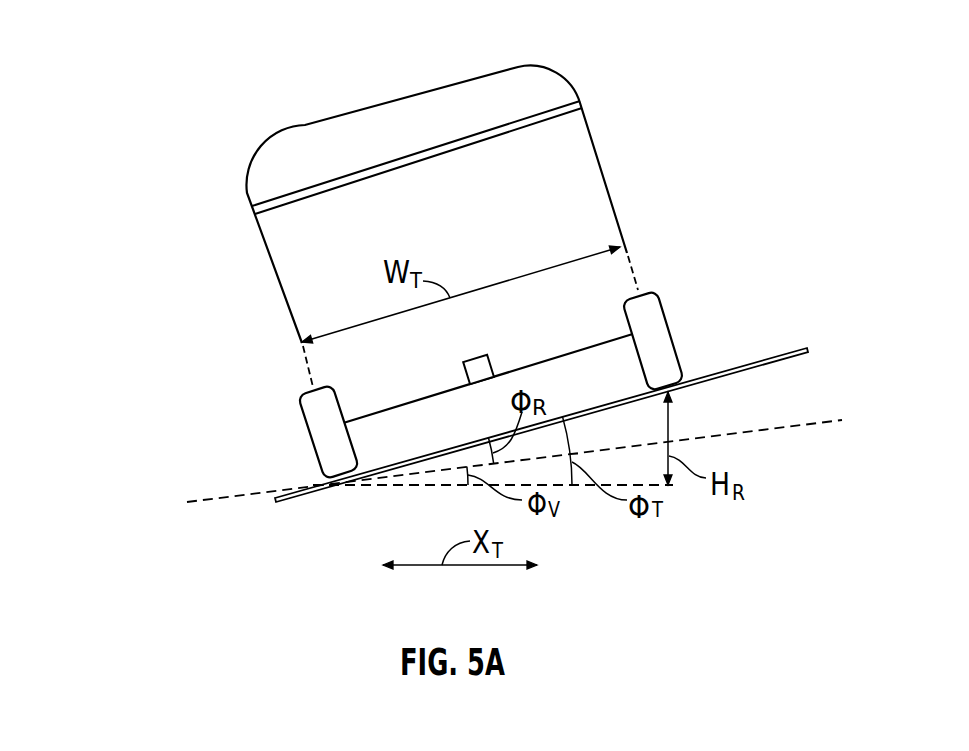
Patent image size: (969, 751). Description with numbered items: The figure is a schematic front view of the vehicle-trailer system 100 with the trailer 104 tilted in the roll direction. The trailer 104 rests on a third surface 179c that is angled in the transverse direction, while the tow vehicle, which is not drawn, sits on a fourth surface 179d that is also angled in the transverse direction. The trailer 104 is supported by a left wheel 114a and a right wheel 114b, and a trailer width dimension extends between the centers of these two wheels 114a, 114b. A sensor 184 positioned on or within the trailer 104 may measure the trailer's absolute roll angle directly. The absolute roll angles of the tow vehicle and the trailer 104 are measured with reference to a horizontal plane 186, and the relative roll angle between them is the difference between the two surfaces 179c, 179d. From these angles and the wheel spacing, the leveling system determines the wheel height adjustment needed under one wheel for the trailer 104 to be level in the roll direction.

The vehicle-trailer system 100 is at (134, 30).
The trailer 104 is at (568, 72).
The left wheel 114a is at (305, 427).
The right wheel 114b is at (670, 325).
The third surface 179c is at (778, 355).
The fourth surface 179d is at (788, 427).
The sensor 184 is at (477, 353).
The horizontal plane 186 is at (383, 485).